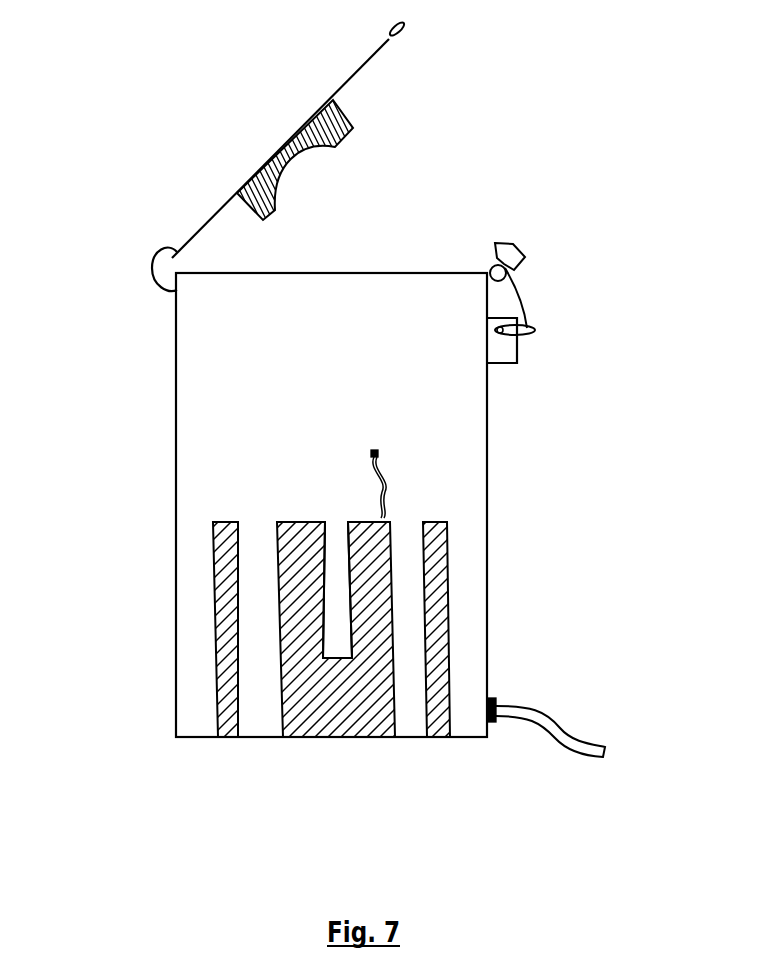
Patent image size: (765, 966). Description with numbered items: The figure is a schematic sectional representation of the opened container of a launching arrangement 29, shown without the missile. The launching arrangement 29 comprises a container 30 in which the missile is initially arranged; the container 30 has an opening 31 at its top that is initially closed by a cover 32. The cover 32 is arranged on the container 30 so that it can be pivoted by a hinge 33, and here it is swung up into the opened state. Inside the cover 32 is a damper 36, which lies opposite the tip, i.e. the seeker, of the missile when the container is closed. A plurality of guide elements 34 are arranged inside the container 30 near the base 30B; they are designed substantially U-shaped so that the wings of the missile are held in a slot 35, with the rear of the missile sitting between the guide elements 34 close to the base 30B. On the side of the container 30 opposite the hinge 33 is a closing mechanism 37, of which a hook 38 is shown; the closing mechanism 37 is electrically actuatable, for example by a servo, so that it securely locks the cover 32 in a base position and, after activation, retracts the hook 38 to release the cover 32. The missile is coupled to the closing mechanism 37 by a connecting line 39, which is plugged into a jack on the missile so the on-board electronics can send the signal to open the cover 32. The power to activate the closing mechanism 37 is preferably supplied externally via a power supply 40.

The launching arrangement 29 is at (267, 505).
The container 30 is at (173, 453).
The base 30B is at (473, 740).
The opening 31 is at (431, 261).
The cover 32 is at (357, 53).
The hinge 33 is at (148, 234).
The guide elements 34 is at (443, 592).
The slot 35 is at (342, 545).
The damper 36 is at (280, 162).
The closing mechanism 37 is at (552, 295).
The hook 38 is at (513, 256).
The connecting line 39 is at (387, 475).
The power supply 40 is at (567, 728).